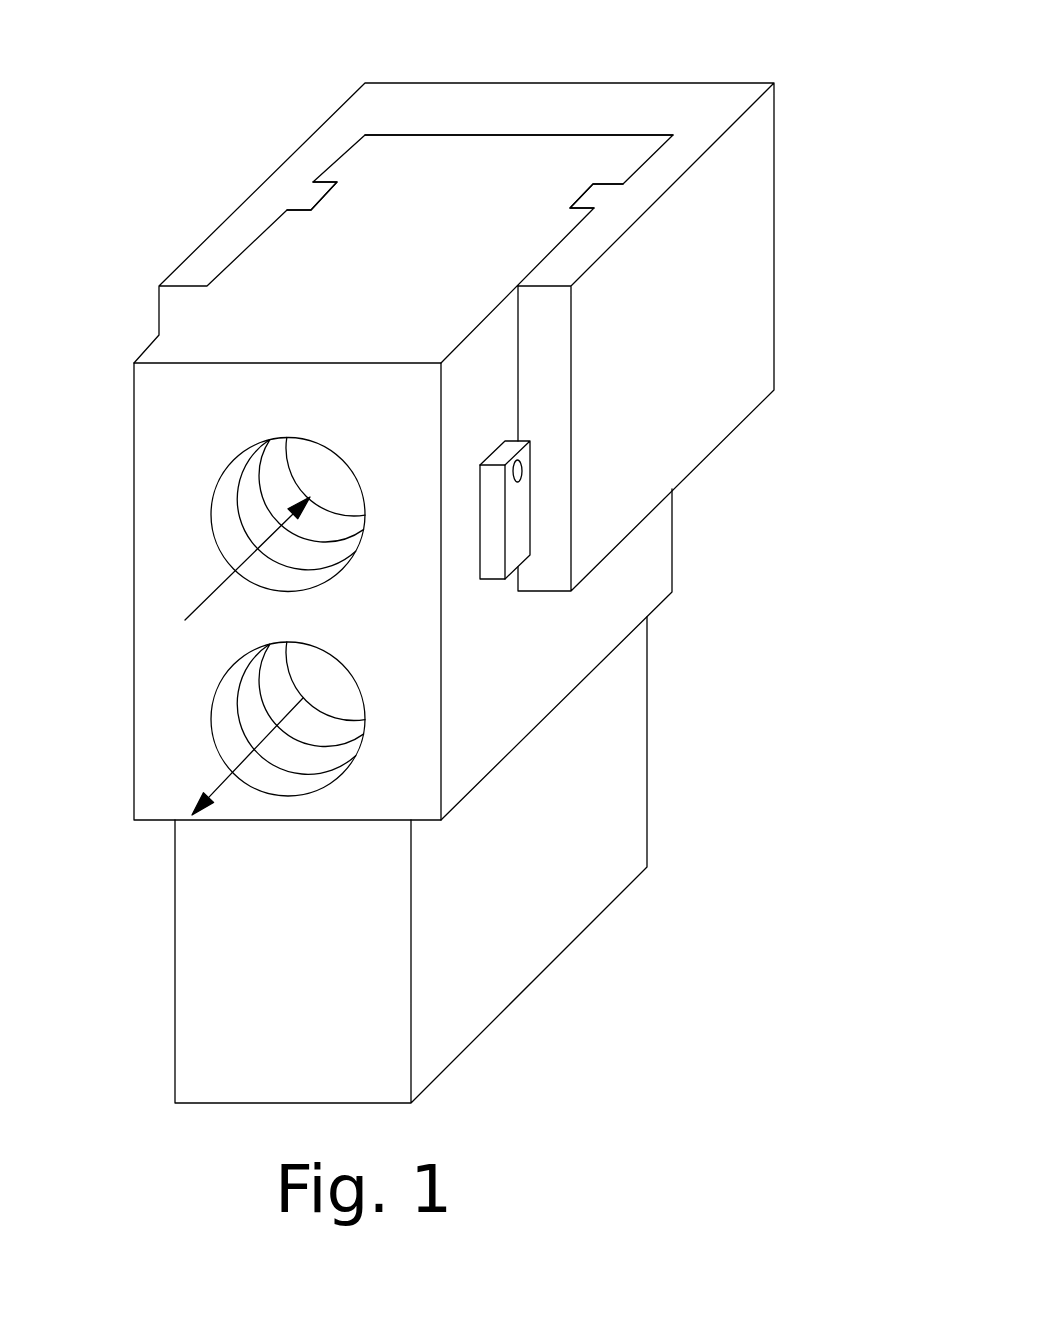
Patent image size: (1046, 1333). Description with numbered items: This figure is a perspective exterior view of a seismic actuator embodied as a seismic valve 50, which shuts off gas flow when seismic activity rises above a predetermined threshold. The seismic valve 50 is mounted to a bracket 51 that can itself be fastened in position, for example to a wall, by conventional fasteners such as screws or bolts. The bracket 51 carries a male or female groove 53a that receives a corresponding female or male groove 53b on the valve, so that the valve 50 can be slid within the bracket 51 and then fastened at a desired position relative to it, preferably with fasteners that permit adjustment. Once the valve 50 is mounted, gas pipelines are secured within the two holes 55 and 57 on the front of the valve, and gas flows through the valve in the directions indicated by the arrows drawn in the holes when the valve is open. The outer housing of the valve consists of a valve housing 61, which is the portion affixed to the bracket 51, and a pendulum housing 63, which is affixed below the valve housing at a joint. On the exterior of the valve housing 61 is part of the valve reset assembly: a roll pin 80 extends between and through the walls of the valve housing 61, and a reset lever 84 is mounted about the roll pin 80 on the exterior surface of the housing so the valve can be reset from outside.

The seismic valve 50 is at (485, 563).
The bracket 51 is at (778, 224).
The groove 53a is at (322, 201).
The groove 53b is at (323, 203).
The hole 55 is at (211, 505).
The hole 57 is at (211, 718).
The valve housing 61 is at (658, 563).
The pendulum housing 63 is at (632, 812).
The roll pin 80 is at (523, 469).
The reset lever 84 is at (523, 508).